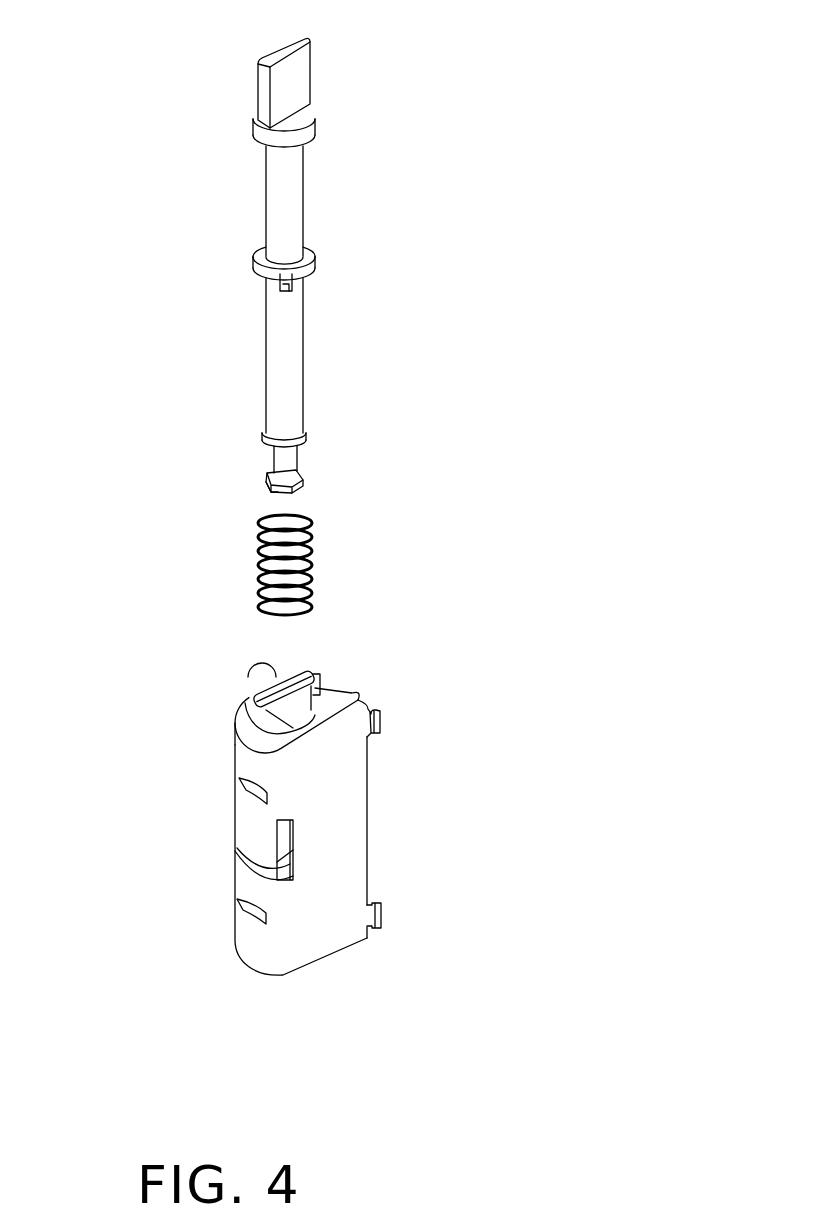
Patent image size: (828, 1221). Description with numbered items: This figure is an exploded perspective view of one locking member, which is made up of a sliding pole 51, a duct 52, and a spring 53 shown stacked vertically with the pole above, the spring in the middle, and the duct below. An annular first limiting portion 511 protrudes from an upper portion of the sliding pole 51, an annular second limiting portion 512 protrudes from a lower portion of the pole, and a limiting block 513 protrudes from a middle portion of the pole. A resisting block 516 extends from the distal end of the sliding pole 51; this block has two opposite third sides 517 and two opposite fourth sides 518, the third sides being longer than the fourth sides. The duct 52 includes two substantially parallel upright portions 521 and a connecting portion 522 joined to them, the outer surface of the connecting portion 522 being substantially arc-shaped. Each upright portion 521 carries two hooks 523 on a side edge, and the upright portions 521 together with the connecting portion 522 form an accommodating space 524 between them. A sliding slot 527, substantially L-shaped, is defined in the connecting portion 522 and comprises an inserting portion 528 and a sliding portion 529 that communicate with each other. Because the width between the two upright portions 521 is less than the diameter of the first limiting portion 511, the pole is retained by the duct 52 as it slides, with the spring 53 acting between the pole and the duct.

The sliding pole 51 is at (393, 286).
The first limiting portion 511 is at (311, 130).
The second limiting portion 512 is at (305, 433).
The limiting block 513 is at (288, 292).
The resisting block 516 is at (302, 475).
The third sides 517 is at (273, 487).
The fourth sides 518 is at (297, 490).
The spring 53 is at (303, 570).
The duct 52 is at (192, 769).
The upright portions 521 is at (357, 815).
The connecting portion 522 is at (257, 772).
The hook 523 is at (380, 720).
The accommodating space 524 is at (293, 722).
The sliding slot 527 is at (128, 849).
The inserting portion 528 is at (280, 842).
The sliding portion 529 is at (253, 867).